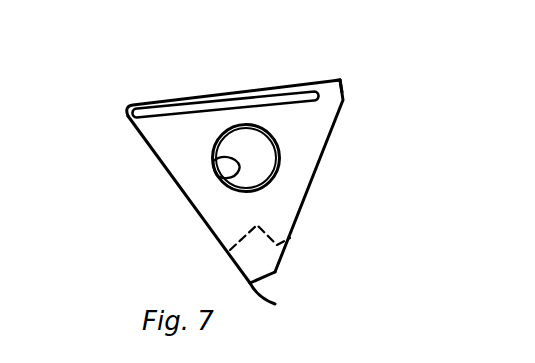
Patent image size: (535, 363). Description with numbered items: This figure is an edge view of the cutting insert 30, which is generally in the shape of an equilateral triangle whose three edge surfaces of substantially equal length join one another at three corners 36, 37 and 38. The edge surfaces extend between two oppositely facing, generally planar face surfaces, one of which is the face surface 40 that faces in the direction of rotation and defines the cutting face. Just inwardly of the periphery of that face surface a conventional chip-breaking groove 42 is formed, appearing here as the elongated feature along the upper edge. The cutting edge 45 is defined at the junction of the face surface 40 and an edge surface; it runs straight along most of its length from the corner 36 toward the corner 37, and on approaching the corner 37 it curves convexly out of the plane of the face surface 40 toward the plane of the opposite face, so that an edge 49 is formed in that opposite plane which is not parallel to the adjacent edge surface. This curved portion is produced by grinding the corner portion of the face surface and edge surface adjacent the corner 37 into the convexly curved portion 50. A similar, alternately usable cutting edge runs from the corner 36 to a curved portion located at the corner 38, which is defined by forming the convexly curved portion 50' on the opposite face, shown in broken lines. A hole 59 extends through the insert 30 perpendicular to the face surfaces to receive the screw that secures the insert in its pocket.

The insert 30 is at (243, 104).
The corner 36 is at (125, 108).
The corner 37 is at (340, 80).
The corner 38 is at (275, 304).
The face surface 40 is at (235, 222).
The chip-breaking groove 42 is at (178, 115).
The cutting edge 45 is at (279, 66).
The edge 49 is at (275, 272).
The convexly curved portion 50 is at (356, 176).
The convexly curved portion 50' is at (308, 231).
The hole 59 is at (213, 161).